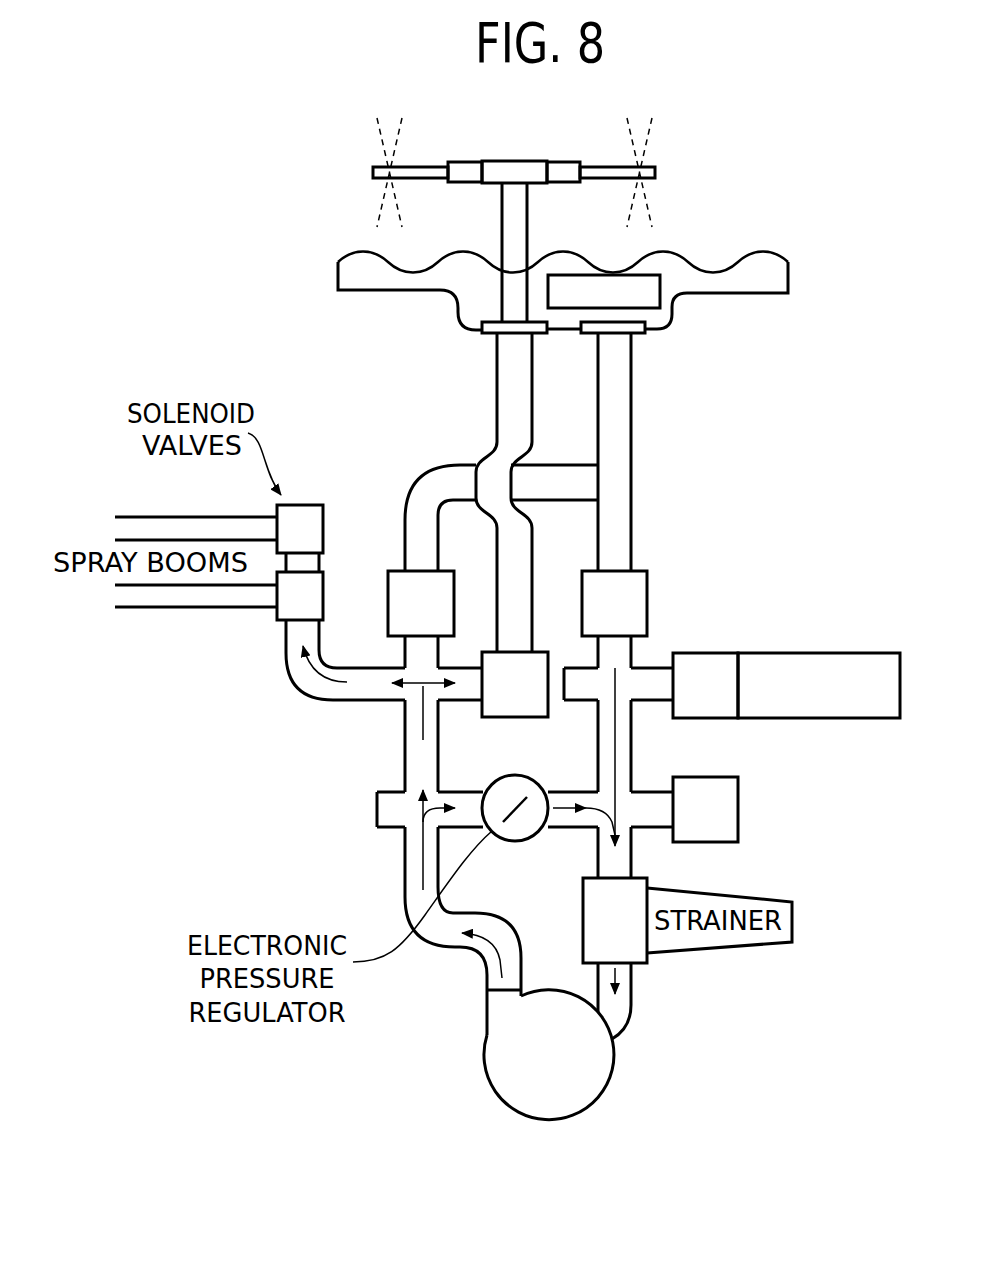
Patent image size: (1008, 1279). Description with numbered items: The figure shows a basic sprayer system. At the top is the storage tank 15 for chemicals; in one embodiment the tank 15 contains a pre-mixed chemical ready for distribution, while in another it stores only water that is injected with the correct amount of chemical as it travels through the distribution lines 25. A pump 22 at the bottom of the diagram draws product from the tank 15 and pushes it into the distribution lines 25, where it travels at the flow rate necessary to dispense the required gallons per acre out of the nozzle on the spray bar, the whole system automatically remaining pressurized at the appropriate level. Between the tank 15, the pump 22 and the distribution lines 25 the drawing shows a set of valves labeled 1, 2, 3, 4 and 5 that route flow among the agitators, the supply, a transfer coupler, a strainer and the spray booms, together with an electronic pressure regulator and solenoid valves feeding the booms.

The storage tank 15 is at (738, 220).
The agitator valve 5 is at (388, 590).
The supply valve 1 is at (647, 583).
The return valve 2 is at (540, 652).
The transfer coupler valve 3 is at (708, 652).
The valve 4 is at (738, 808).
The distribution lines 25 is at (359, 714).
The pump 22 is at (613, 1052).